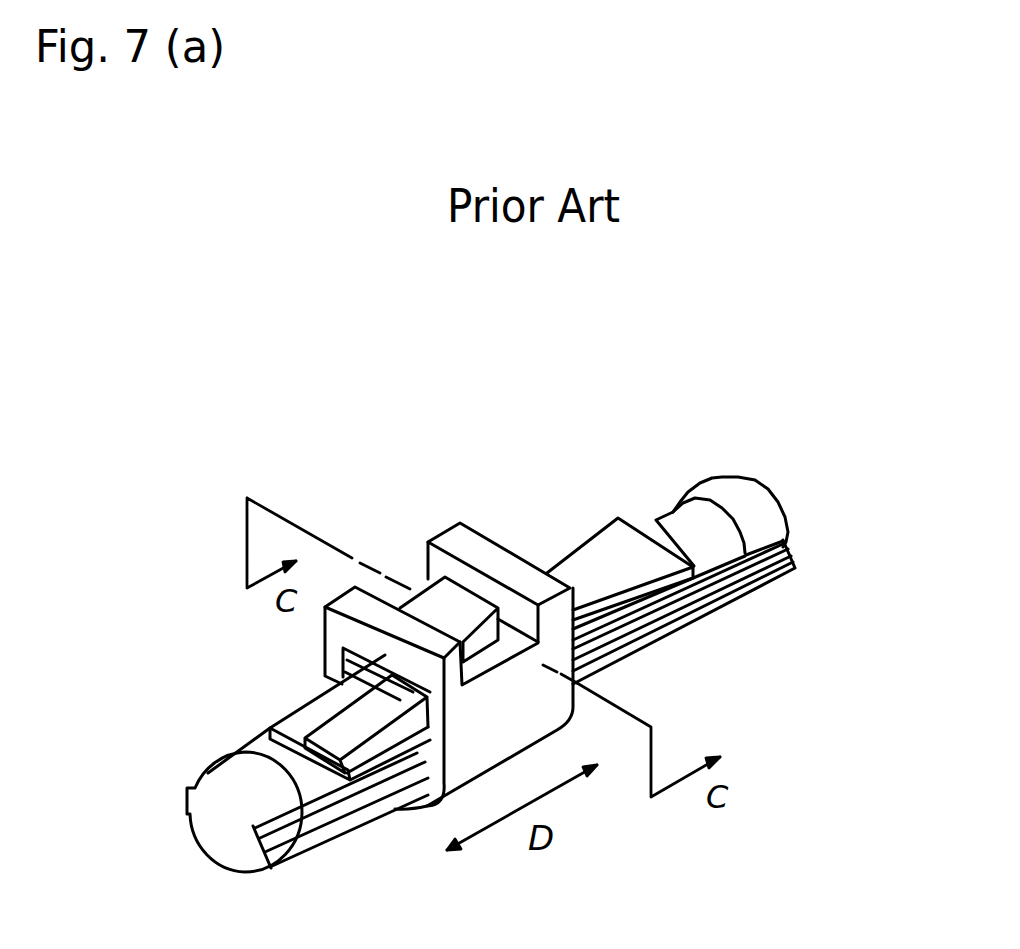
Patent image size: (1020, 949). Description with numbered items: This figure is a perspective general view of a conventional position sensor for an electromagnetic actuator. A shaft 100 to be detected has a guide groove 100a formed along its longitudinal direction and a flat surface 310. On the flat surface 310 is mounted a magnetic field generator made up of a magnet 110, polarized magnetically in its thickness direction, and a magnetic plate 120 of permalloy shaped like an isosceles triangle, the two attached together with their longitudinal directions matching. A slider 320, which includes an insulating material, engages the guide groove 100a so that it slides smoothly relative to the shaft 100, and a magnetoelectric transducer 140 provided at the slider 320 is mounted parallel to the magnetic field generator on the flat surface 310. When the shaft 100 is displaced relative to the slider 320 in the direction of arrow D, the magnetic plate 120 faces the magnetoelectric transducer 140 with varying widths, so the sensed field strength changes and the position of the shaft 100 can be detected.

The shaft 100 is at (753, 510).
The guide groove 100a is at (185, 803).
The magnet 110 is at (663, 625).
The magnetic plate 120 is at (617, 540).
The magnetoelectric transducer 140 is at (460, 597).
The flat surface 310 is at (778, 576).
The slider 320 is at (420, 800).